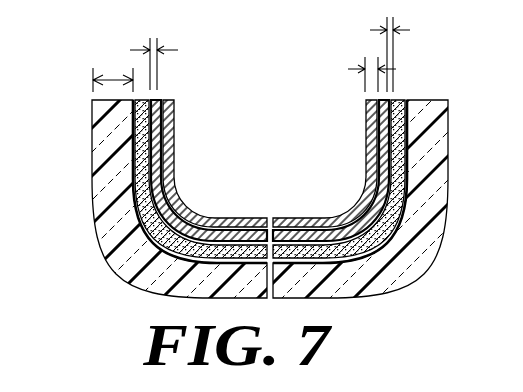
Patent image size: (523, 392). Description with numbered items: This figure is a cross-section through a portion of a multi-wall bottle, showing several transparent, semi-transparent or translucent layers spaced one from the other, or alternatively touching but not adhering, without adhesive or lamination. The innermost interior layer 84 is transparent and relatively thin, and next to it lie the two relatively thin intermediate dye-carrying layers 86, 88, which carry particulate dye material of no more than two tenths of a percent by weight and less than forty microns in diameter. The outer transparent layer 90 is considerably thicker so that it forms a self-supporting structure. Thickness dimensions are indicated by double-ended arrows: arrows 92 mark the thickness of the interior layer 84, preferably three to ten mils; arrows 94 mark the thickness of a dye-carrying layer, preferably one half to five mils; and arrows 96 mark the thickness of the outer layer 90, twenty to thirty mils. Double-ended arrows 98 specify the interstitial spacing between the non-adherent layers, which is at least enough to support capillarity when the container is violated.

The interior layer 84 is at (168, 175).
The intermediate dye-carrying layer 86 is at (153, 141).
The intermediate dye-carrying layer 88 is at (148, 110).
The outer transparent layer 90 is at (103, 143).
The double-ended arrows 92 is at (353, 70).
The double-ended arrows 94 is at (177, 50).
The double-ended arrows 96 is at (115, 79).
The double-ended arrows 98 is at (408, 31).